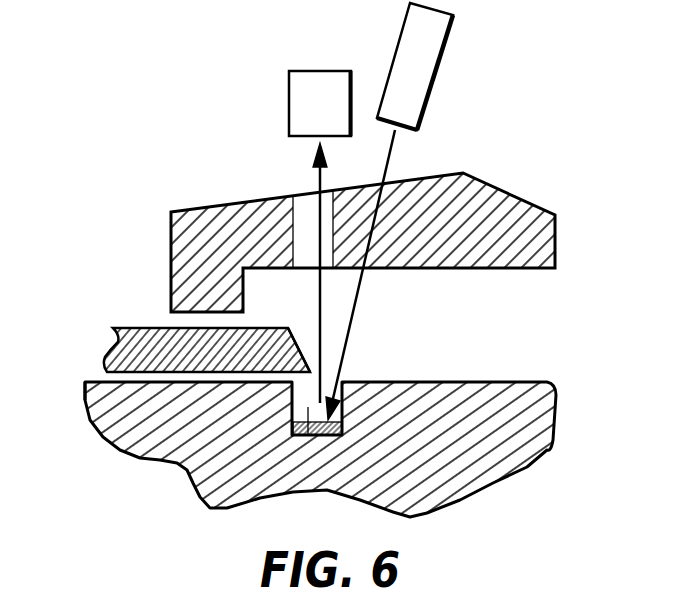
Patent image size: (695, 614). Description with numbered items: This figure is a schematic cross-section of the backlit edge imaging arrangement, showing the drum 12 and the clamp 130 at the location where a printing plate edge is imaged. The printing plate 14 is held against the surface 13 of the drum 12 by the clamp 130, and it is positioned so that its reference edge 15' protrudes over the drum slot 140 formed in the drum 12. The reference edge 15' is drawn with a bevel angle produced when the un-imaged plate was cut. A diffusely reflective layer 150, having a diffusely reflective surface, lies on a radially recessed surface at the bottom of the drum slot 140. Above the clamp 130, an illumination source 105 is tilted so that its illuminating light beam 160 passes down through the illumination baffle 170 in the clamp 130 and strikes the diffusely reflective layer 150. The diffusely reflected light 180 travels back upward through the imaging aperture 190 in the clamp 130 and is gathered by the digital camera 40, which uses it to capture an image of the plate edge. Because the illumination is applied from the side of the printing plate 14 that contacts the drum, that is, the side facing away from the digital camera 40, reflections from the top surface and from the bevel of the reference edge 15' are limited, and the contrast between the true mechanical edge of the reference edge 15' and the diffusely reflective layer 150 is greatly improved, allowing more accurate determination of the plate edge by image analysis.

The drum 12 is at (498, 382).
The surface of drum 13 is at (97, 381).
The printing plate 14 is at (132, 328).
The reference edge 15' is at (283, 332).
The digital camera 40 is at (322, 70).
The illumination source 105 is at (448, 42).
The clamp 130 is at (557, 232).
The drum slot 140 is at (308, 435).
The diffusely reflective layer 150 is at (327, 435).
The illuminating light beam 160 is at (355, 307).
The illumination baffle 170 is at (372, 265).
The diffusely reflected light 180 is at (317, 172).
The imaging aperture 190 is at (307, 207).